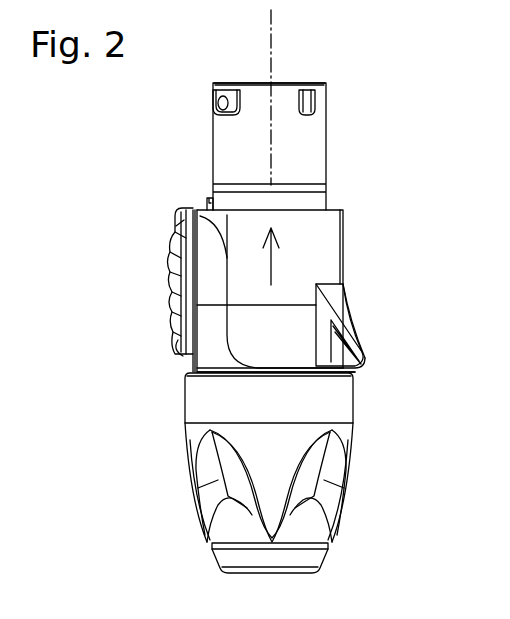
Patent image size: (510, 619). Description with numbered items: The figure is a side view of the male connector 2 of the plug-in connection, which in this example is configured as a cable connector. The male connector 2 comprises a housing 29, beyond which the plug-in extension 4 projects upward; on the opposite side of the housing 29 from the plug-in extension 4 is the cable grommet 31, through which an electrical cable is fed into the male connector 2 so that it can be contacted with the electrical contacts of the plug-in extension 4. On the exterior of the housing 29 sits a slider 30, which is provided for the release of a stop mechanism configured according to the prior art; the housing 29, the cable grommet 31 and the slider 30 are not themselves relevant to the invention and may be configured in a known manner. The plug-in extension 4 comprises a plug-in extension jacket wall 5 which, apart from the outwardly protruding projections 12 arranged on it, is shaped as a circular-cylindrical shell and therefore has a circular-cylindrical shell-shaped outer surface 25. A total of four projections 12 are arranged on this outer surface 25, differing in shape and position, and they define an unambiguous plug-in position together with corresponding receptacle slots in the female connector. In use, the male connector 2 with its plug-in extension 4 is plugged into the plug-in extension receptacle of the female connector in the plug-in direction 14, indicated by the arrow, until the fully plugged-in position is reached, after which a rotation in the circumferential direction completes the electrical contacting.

The male connector 2 is at (364, 304).
The plug-in extension 4 is at (315, 169).
The plug-in extension jacket wall 5 is at (243, 161).
The outwardly protruding projections 12 is at (217, 98).
The plug-in direction 14 is at (271, 260).
The outer surface 25 is at (230, 125).
The housing 29 is at (248, 323).
The slider 30 is at (182, 325).
The cable grommet 31 is at (337, 458).